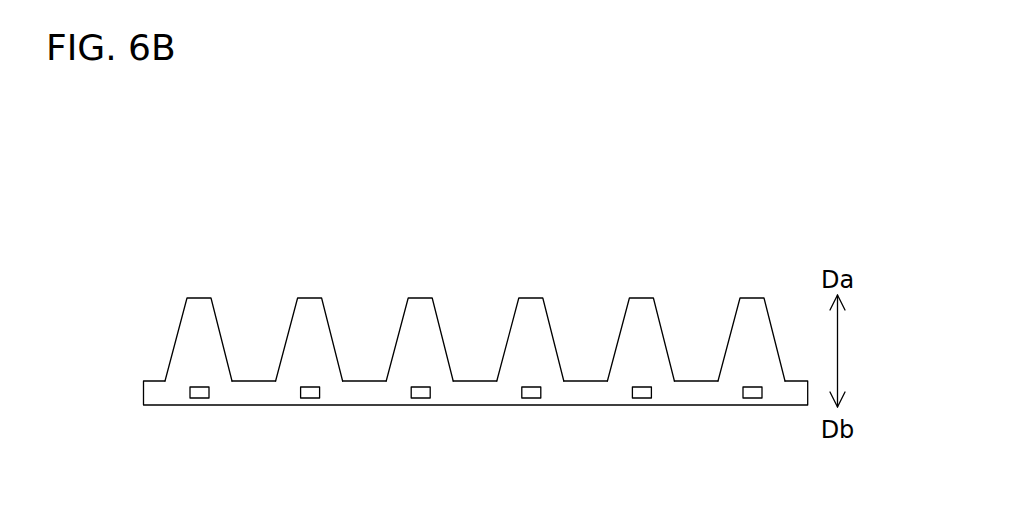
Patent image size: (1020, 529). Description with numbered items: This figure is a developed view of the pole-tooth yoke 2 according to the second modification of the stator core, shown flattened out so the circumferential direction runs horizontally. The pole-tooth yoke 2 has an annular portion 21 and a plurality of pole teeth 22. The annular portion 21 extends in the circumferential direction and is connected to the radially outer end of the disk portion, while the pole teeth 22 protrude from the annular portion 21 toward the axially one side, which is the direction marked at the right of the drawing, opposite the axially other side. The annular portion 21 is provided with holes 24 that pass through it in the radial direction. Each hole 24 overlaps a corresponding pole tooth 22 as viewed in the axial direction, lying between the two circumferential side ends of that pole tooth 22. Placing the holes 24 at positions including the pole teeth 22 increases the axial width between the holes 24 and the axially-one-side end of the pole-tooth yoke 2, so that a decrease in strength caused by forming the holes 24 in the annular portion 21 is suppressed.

The pole-tooth yoke 2 is at (514, 233).
The annular portion 21 is at (475, 393).
The pole teeth 22 is at (420, 309).
The holes 24 is at (400, 390).